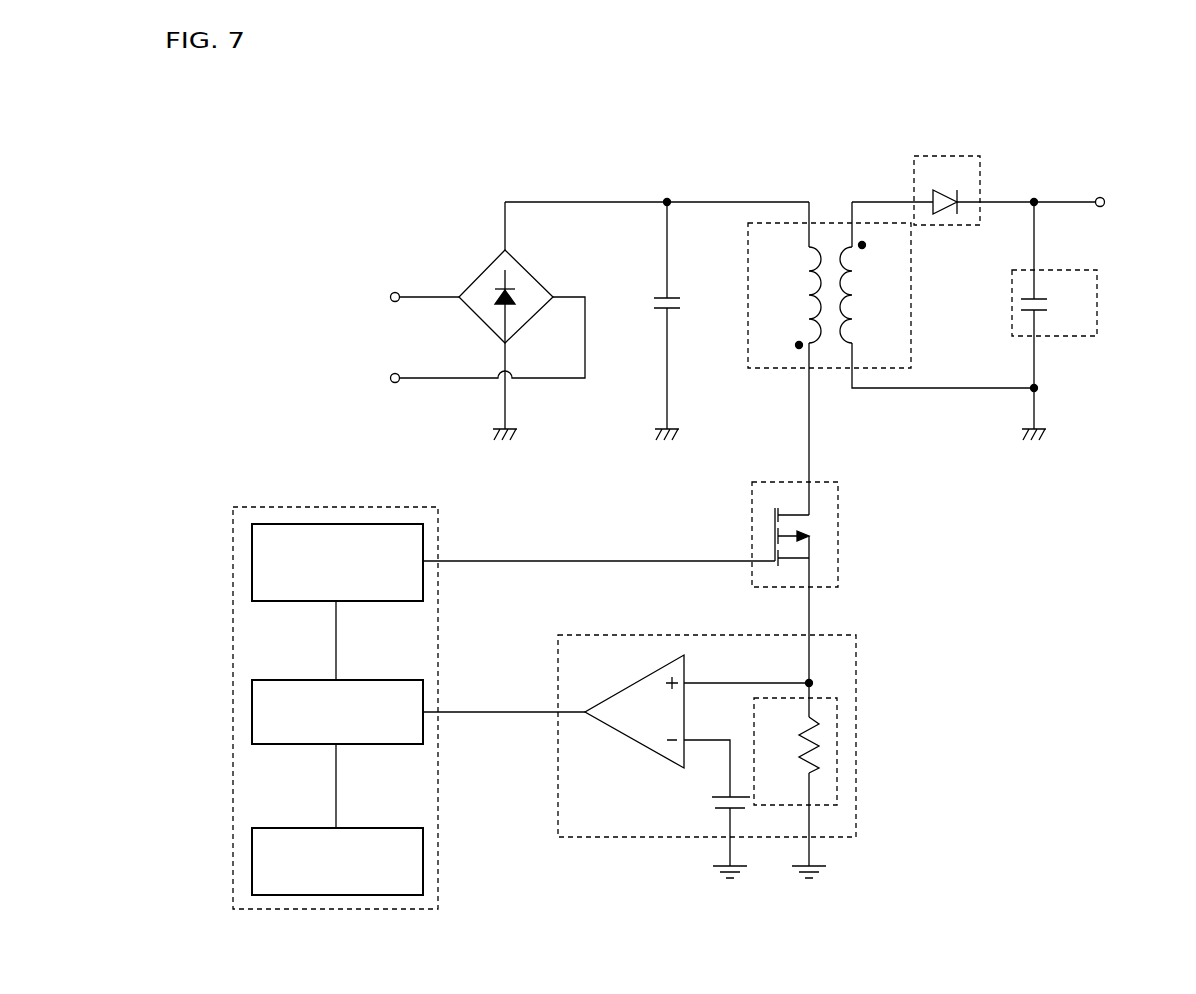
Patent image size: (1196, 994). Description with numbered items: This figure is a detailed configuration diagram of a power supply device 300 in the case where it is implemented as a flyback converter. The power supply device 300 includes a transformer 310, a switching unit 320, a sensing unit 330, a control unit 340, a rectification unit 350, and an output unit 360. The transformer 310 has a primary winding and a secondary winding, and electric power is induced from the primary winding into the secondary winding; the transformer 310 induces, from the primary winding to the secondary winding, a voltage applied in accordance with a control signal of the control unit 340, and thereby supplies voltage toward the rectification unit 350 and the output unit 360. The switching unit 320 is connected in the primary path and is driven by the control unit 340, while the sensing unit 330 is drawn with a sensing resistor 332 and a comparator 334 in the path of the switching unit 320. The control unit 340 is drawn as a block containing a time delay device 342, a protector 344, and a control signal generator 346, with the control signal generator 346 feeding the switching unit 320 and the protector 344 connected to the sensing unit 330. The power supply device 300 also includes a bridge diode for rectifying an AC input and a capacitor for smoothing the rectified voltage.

The power supply device 300 is at (193, 89).
The transformer 310 is at (911, 300).
The switching unit 320 is at (838, 533).
The sensing unit 330 is at (856, 680).
The sensing resistor 332 is at (838, 752).
The comparator 334 is at (656, 756).
The control unit 340 is at (337, 507).
The time delay device 342 is at (252, 863).
The protector 344 is at (252, 712).
The control signal generator 346 is at (252, 562).
The rectification unit 350 is at (948, 156).
The output unit 360 is at (1097, 300).